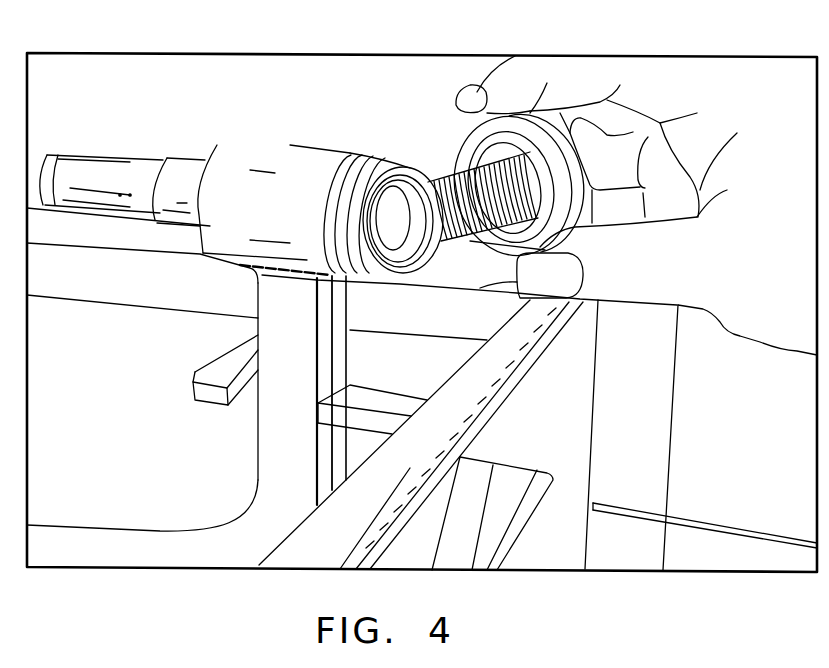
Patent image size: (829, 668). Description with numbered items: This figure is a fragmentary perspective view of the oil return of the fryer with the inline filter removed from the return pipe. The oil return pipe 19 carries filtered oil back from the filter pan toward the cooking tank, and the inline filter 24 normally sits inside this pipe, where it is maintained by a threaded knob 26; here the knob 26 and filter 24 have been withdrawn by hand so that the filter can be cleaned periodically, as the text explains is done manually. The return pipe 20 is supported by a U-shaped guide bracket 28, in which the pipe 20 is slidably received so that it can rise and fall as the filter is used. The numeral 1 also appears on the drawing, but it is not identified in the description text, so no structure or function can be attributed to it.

The apparatus 1 is at (98, 360).
The tube 19 is at (122, 178).
The support post 20 is at (258, 437).
The threaded nozzle body 24 is at (440, 173).
The collar nut 26 is at (454, 170).
The shelf bracket 28 is at (418, 383).